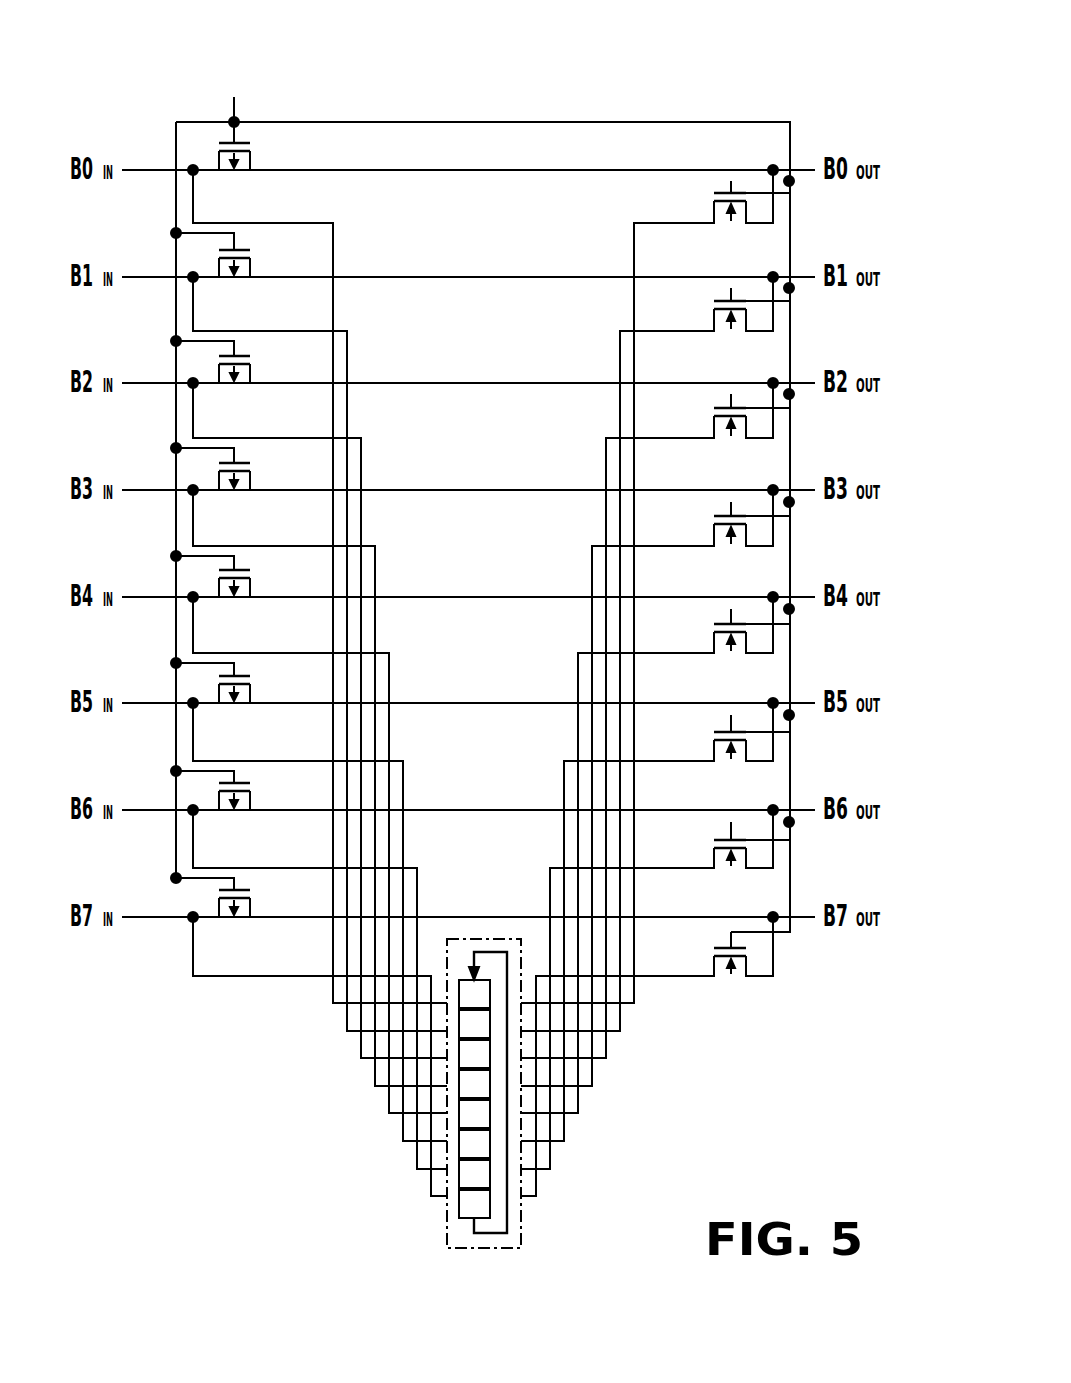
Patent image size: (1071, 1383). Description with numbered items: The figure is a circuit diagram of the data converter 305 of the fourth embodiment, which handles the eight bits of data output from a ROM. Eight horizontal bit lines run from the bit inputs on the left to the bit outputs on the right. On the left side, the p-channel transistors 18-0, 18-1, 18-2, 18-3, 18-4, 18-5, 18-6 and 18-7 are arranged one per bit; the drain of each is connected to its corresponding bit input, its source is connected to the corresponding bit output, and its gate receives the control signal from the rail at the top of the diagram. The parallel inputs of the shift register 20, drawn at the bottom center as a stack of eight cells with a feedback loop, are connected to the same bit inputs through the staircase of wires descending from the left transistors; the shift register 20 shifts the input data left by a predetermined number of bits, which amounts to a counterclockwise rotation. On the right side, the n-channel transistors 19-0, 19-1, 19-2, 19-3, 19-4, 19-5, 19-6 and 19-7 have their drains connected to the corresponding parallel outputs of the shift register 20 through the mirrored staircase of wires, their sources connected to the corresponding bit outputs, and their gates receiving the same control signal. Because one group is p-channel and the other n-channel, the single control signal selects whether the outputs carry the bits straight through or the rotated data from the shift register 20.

The data converter 305 is at (706, 100).
The p-channel transistor 18-0 is at (252, 147).
The p-channel transistor 18-1 is at (252, 254).
The p-channel transistor 18-2 is at (252, 360).
The p-channel transistor 18-3 is at (252, 467).
The p-channel transistor 18-4 is at (252, 574).
The p-channel transistor 18-5 is at (252, 680).
The p-channel transistor 18-6 is at (252, 787).
The p-channel transistor 18-7 is at (252, 894).
The n-channel transistor 19-0 is at (713, 197).
The n-channel transistor 19-1 is at (713, 304).
The n-channel transistor 19-2 is at (713, 410).
The n-channel transistor 19-3 is at (713, 517).
The n-channel transistor 19-4 is at (713, 624).
The n-channel transistor 19-5 is at (713, 730).
The n-channel transistor 19-6 is at (713, 837).
The n-channel transistor 19-7 is at (713, 944).
The shift register 20 is at (447, 1224).